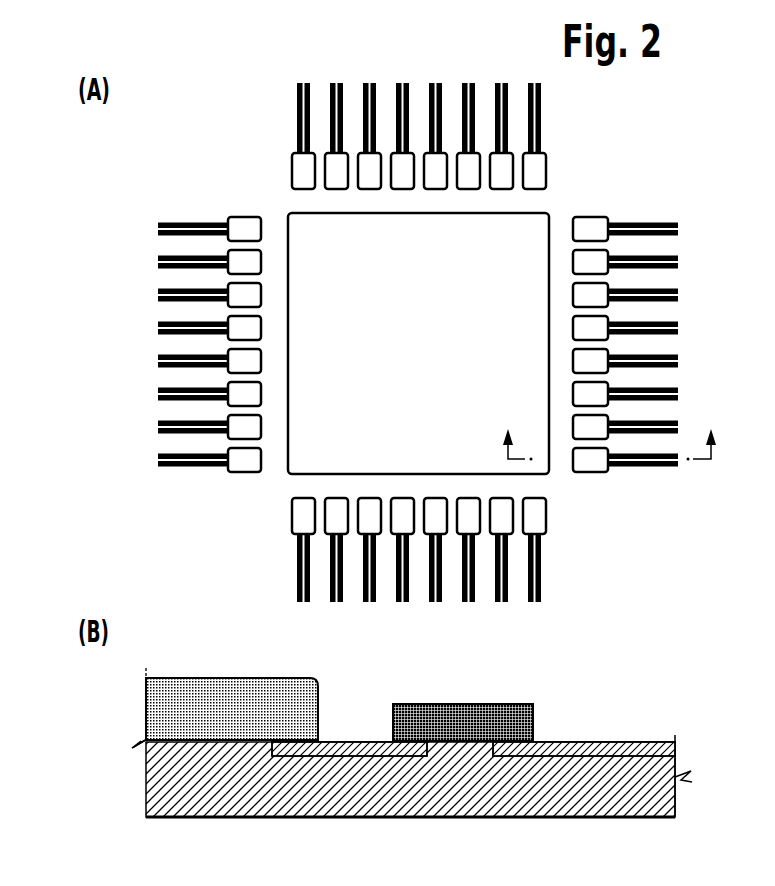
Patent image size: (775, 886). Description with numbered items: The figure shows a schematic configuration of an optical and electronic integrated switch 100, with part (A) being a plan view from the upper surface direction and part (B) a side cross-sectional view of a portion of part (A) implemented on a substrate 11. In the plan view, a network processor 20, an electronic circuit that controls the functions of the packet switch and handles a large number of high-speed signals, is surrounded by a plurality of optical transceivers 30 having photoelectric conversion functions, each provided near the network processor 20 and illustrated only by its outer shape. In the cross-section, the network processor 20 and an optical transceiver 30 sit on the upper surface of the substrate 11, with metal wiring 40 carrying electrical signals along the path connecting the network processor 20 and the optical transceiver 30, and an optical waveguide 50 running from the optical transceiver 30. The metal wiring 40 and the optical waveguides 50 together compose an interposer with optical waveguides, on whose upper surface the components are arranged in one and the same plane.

The optical and electronic integrated switch 100 is at (660, 125).
The network processor 20 is at (288, 215).
The optical transceiver 30 is at (587, 217).
The metal wiring 40 is at (350, 742).
The optical waveguide 50 is at (587, 742).
The substrate 11 is at (628, 765).